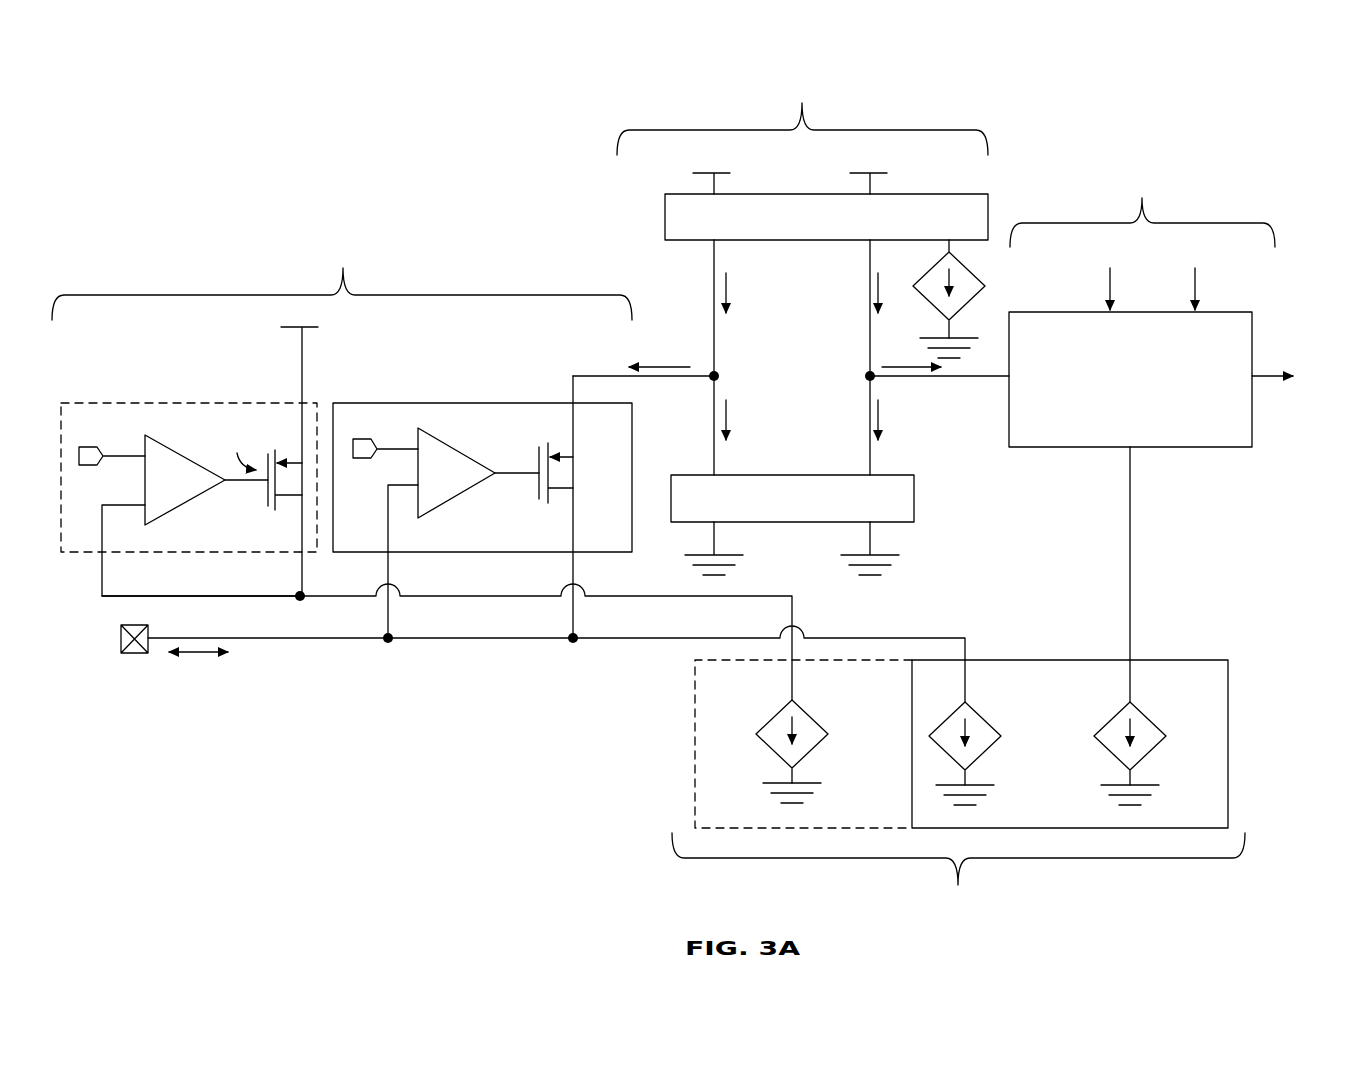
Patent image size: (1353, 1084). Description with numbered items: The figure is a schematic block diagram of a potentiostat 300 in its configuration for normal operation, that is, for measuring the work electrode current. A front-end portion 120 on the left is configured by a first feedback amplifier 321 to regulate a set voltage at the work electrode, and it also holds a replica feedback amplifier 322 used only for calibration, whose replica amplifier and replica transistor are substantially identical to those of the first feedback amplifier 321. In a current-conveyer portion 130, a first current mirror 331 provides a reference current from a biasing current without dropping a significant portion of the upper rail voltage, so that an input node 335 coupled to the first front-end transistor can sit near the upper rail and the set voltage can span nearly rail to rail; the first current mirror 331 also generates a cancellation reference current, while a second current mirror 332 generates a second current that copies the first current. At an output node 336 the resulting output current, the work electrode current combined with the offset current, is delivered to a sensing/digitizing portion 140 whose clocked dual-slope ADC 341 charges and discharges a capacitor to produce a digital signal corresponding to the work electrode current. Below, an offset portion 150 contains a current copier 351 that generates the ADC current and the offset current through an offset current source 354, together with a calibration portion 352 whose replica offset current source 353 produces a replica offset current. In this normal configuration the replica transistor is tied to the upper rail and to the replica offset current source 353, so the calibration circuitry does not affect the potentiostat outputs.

The potentiostat 300 is at (105, 92).
The front-end portion 120 is at (197, 247).
The current-conveyer portion 130 is at (612, 86).
The sensing/digitizing portion 140 is at (1314, 176).
The offset portion 150 is at (885, 921).
The first feedback amplifier 321 is at (478, 400).
The replica feedback amplifier 322 is at (187, 399).
The first current mirror 331 is at (663, 218).
The second current mirror 332 is at (923, 495).
The input node 335 is at (733, 375).
The output node 336 is at (857, 375).
The clocked dual-slope ADC 341 is at (1112, 422).
The current copier 351 is at (1231, 662).
The portion of the current copier 352 is at (690, 705).
The replica offset current source 353 is at (765, 716).
The offset current source 354 is at (942, 710).